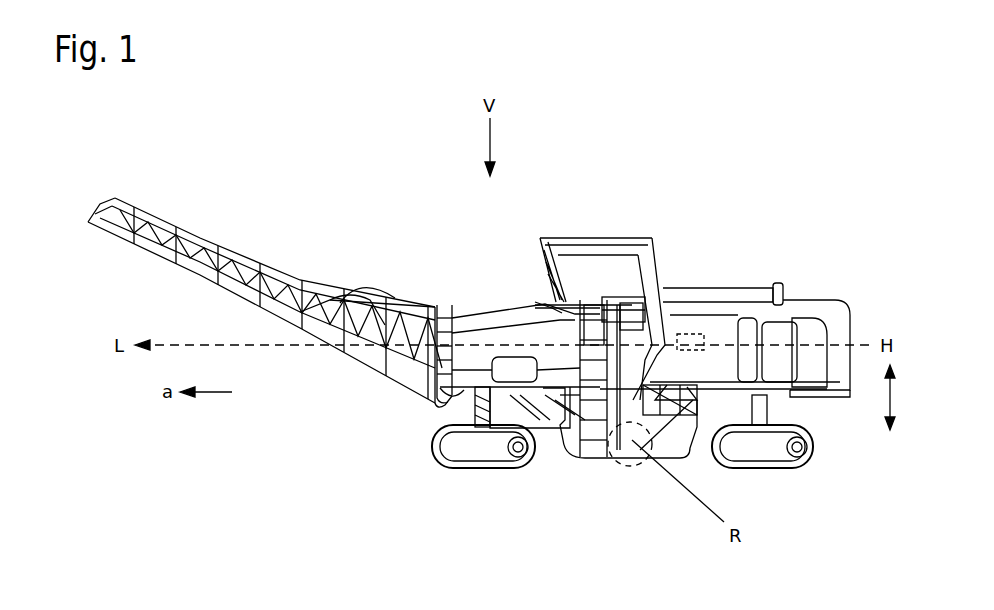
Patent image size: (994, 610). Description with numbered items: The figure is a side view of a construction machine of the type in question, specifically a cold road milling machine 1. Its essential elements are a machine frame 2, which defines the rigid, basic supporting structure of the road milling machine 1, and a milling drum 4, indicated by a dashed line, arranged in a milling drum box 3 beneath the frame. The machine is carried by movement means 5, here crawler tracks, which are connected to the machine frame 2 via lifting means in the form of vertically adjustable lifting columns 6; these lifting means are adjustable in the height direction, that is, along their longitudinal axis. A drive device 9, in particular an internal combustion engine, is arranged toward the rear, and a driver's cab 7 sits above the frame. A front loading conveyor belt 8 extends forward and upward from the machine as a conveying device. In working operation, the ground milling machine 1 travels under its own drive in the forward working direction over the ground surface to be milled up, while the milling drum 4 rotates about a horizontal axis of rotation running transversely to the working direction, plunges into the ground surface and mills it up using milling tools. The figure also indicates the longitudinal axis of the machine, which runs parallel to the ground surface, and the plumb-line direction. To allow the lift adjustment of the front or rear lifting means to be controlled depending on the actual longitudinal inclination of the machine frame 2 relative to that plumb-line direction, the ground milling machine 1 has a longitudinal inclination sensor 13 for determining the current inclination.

The cold road milling machine 1 is at (636, 140).
The machine frame 2 is at (465, 385).
The milling drum box 3 is at (592, 452).
The milling drum 4 is at (636, 482).
The movement means 5 is at (445, 455).
The lifting columns 6 is at (473, 403).
The driver's cab 7 is at (630, 273).
The front loading conveyor belt 8 is at (223, 240).
The drive device 9 is at (783, 343).
The longitudinal inclination sensor 13 is at (690, 347).